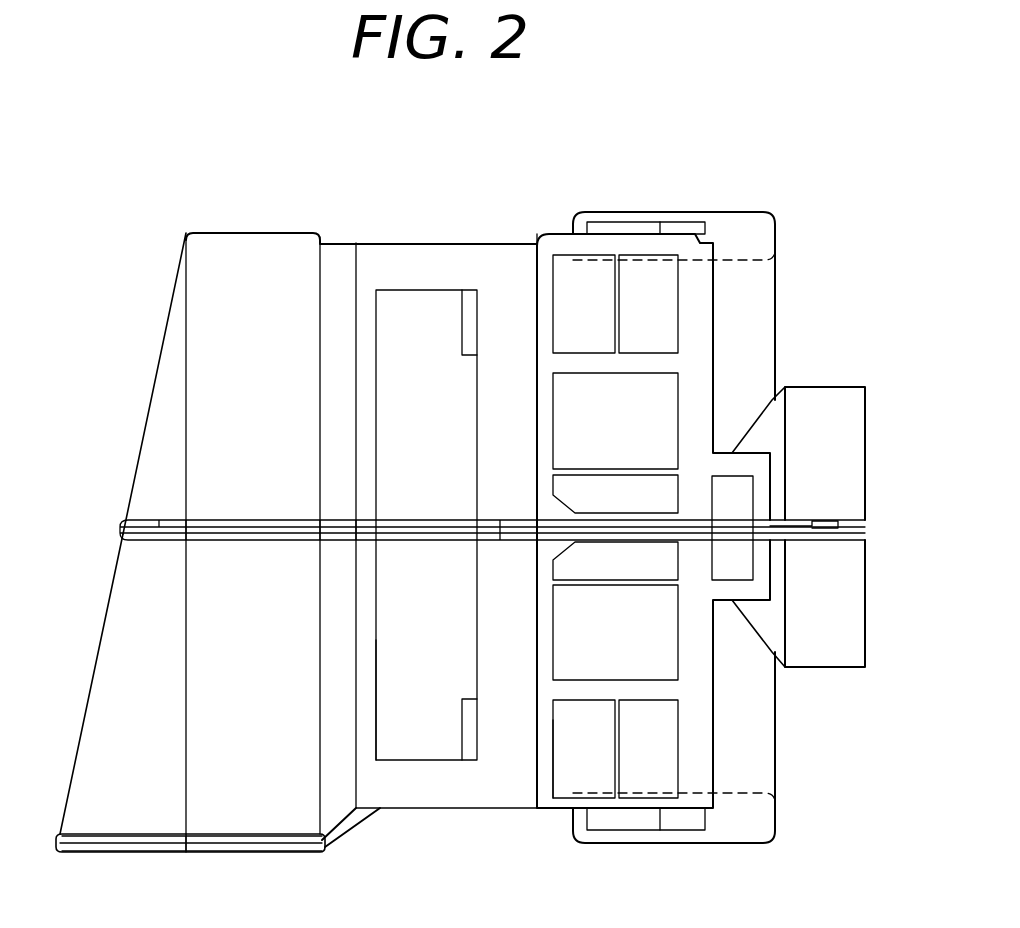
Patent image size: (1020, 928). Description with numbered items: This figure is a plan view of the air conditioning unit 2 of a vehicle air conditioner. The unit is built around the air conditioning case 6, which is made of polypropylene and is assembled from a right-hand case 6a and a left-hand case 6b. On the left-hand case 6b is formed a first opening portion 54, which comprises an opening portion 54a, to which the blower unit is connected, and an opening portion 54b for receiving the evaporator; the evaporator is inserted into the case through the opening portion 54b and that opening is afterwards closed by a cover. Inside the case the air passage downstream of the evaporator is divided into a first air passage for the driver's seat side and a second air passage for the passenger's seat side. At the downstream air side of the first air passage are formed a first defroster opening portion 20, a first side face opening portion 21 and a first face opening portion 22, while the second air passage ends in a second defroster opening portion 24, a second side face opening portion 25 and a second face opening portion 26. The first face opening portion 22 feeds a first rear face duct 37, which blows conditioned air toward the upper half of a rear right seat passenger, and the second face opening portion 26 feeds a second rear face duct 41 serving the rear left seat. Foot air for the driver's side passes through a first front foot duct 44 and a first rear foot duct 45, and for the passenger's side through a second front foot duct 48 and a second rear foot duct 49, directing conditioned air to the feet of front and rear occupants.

The air conditioning unit 2 is at (219, 226).
The air conditioning case 6 is at (493, 243).
The right-hand case 6a is at (147, 400).
The left-hand case 6b is at (100, 636).
The first defroster opening portion 20 is at (376, 333).
The first side face opening portion 21 is at (553, 297).
The first face opening portion 22 is at (553, 427).
The second defroster opening portion 24 is at (376, 658).
The second side face opening portion 25 is at (553, 733).
The second face opening portion 26 is at (553, 560).
The first rear face duct 37 is at (838, 452).
The second rear face duct 41 is at (835, 602).
The first front foot duct 44 is at (651, 222).
The first rear foot duct 45 is at (745, 212).
The second front foot duct 48 is at (623, 832).
The second rear foot duct 49 is at (730, 843).
The first opening portion 54 is at (103, 853).
The opening portion 54a is at (128, 853).
The opening portion for receiving the evaporator 54b is at (232, 853).